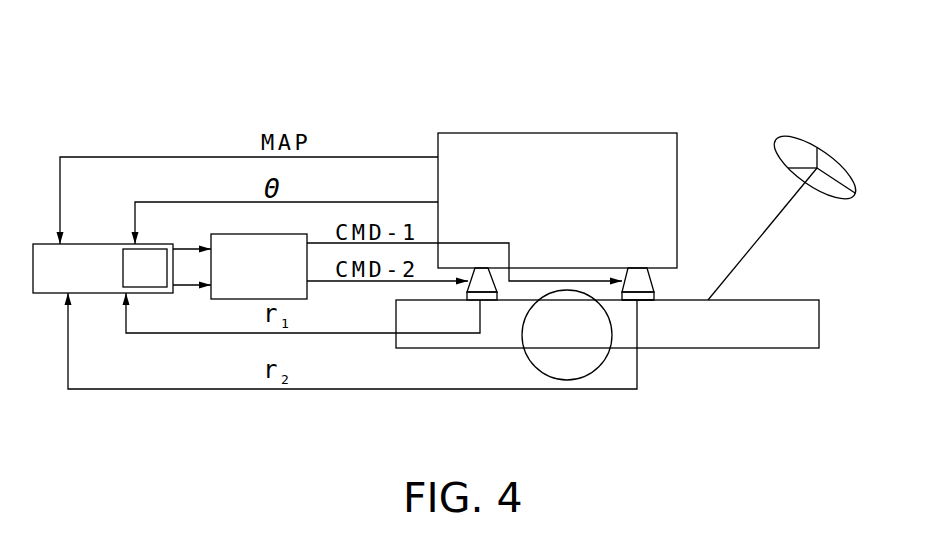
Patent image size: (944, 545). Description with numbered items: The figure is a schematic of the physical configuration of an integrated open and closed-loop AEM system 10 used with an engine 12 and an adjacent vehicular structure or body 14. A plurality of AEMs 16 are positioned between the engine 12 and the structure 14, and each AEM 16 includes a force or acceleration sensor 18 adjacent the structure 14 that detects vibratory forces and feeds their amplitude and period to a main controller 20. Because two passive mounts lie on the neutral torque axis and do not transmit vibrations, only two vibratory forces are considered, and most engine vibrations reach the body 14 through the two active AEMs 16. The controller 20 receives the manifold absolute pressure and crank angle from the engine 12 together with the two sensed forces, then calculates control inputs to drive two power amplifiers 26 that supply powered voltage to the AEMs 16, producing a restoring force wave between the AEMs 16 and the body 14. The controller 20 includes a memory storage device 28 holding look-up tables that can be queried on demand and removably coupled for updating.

The integrated open and closed-loop AEM system 10 is at (142, 108).
The engine 12 is at (580, 211).
The vehicular structure 14 is at (812, 336).
The AEM 16 is at (648, 277).
The force sensor 18 is at (638, 300).
The main controller 20 is at (113, 283).
The power amplifier 26 is at (275, 283).
The memory storage device 28 is at (161, 283).